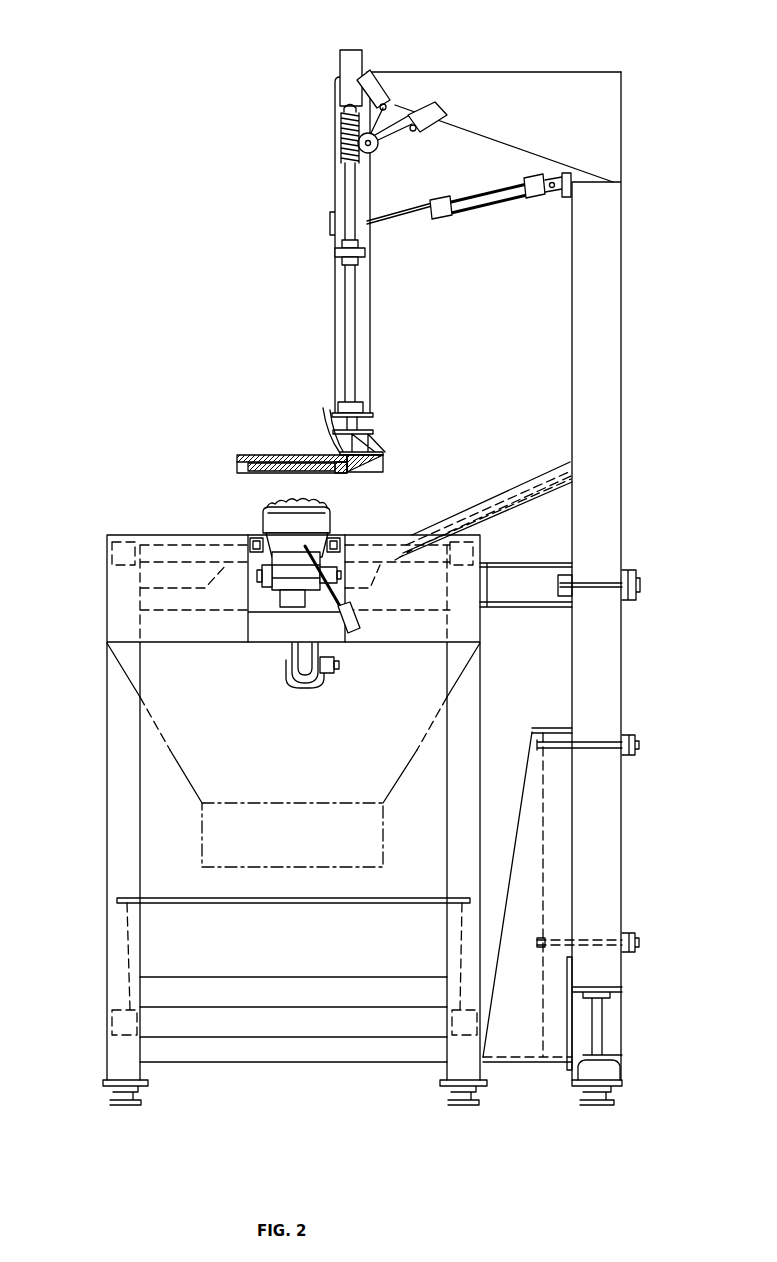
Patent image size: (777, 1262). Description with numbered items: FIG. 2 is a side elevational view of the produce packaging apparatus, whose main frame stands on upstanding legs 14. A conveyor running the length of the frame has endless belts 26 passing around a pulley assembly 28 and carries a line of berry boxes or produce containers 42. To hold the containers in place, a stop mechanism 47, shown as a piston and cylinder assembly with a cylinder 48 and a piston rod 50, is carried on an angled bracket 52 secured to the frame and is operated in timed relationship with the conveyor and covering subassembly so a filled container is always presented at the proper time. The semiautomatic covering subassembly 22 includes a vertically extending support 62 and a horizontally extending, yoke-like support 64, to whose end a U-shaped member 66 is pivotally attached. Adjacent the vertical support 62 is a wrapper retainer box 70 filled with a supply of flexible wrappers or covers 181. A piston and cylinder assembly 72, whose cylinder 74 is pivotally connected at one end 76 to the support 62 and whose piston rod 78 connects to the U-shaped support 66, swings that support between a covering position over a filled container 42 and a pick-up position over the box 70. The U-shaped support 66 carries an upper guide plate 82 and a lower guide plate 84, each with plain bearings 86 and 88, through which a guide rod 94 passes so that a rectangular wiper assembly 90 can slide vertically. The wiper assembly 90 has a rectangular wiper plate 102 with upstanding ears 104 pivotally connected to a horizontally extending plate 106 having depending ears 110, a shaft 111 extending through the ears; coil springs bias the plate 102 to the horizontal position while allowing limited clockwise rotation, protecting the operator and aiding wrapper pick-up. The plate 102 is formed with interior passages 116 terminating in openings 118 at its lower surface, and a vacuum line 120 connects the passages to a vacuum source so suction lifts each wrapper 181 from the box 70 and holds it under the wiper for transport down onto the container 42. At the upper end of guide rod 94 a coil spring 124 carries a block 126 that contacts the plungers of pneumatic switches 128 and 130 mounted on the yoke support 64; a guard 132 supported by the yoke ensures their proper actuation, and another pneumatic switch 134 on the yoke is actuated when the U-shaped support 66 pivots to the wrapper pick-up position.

The upstanding legs 14 is at (483, 706).
The semiautomatic covering subassembly 22 is at (322, 297).
The endless belts 26 is at (273, 558).
The pulley assembly 28 is at (268, 602).
The produce containers 42 is at (296, 549).
The stop mechanism 47 is at (318, 606).
The cylinder 48 is at (358, 624).
The piston rod 50 is at (306, 547).
The angled bracket 52 is at (345, 595).
The vertically extending support 62 is at (622, 428).
The yoke-like support 64 is at (518, 85).
The U-shaped member 66 is at (335, 182).
The wrapper retainer box 70 is at (521, 480).
The piston and cylinder assembly 72 is at (490, 205).
The cylinder 74 is at (477, 190).
The cylinder end 76 is at (555, 196).
The piston rod 78 is at (393, 217).
The upper guide plate 82 is at (365, 252).
The lower guide plate 84 is at (373, 415).
The plain bearing 86 is at (342, 243).
The plain bearing 88 is at (365, 402).
The rectangular wiper assembly 90 is at (249, 450).
The guide rod 94 is at (352, 325).
The rectangular wiper plate 102 is at (383, 465).
The upstanding ears 104 is at (383, 452).
The horizontally extending plate 106 is at (373, 432).
The depending ears 110 is at (373, 440).
The shaft 111 is at (372, 468).
The interior passages 116 is at (240, 463).
The openings 118 is at (338, 472).
The vacuum line 120 is at (335, 432).
The coil spring 124 is at (340, 132).
The block 126 is at (343, 110).
The pneumatic switch 128 is at (357, 58).
The pneumatic switch 130 is at (380, 80).
The guard 132 is at (378, 145).
The pneumatic switch 134 is at (437, 103).
The flexible wrappers 181 is at (331, 515).